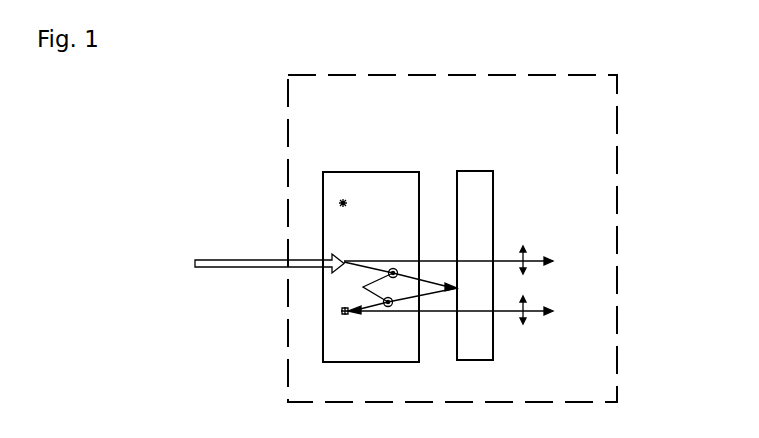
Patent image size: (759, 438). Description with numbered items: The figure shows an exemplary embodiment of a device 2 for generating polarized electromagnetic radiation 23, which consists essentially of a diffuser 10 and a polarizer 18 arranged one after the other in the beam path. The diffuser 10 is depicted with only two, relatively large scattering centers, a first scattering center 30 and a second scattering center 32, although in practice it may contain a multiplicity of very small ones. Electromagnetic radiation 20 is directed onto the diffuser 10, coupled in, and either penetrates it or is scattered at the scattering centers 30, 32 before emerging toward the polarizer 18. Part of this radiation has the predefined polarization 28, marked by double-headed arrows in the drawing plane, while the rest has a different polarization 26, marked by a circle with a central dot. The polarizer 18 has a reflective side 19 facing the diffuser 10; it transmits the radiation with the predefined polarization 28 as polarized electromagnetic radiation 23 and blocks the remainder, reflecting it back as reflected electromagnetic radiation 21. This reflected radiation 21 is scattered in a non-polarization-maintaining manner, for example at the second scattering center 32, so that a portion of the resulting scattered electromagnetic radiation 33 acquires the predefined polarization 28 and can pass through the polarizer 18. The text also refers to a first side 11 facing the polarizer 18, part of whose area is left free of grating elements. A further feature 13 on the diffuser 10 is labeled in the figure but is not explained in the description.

The device for generating polarized electromagnetic radiation 2 is at (494, 66).
The diffuser 10 is at (379, 162).
The first side 11 is at (420, 352).
The side wall of first component 13 is at (324, 325).
The polarizer 18 is at (481, 160).
The reflective side 19 is at (457, 186).
The electromagnetic radiation 20 is at (222, 267).
The reflected electromagnetic radiation 21 is at (412, 277).
The polarized electromagnetic radiation 23 is at (540, 258).
The different polarization 26 is at (362, 287).
The predefined polarization 28 is at (527, 265).
The first scattering center 30 is at (345, 316).
The second scattering center 32 is at (342, 198).
The scattered electromagnetic radiation 33 is at (390, 314).